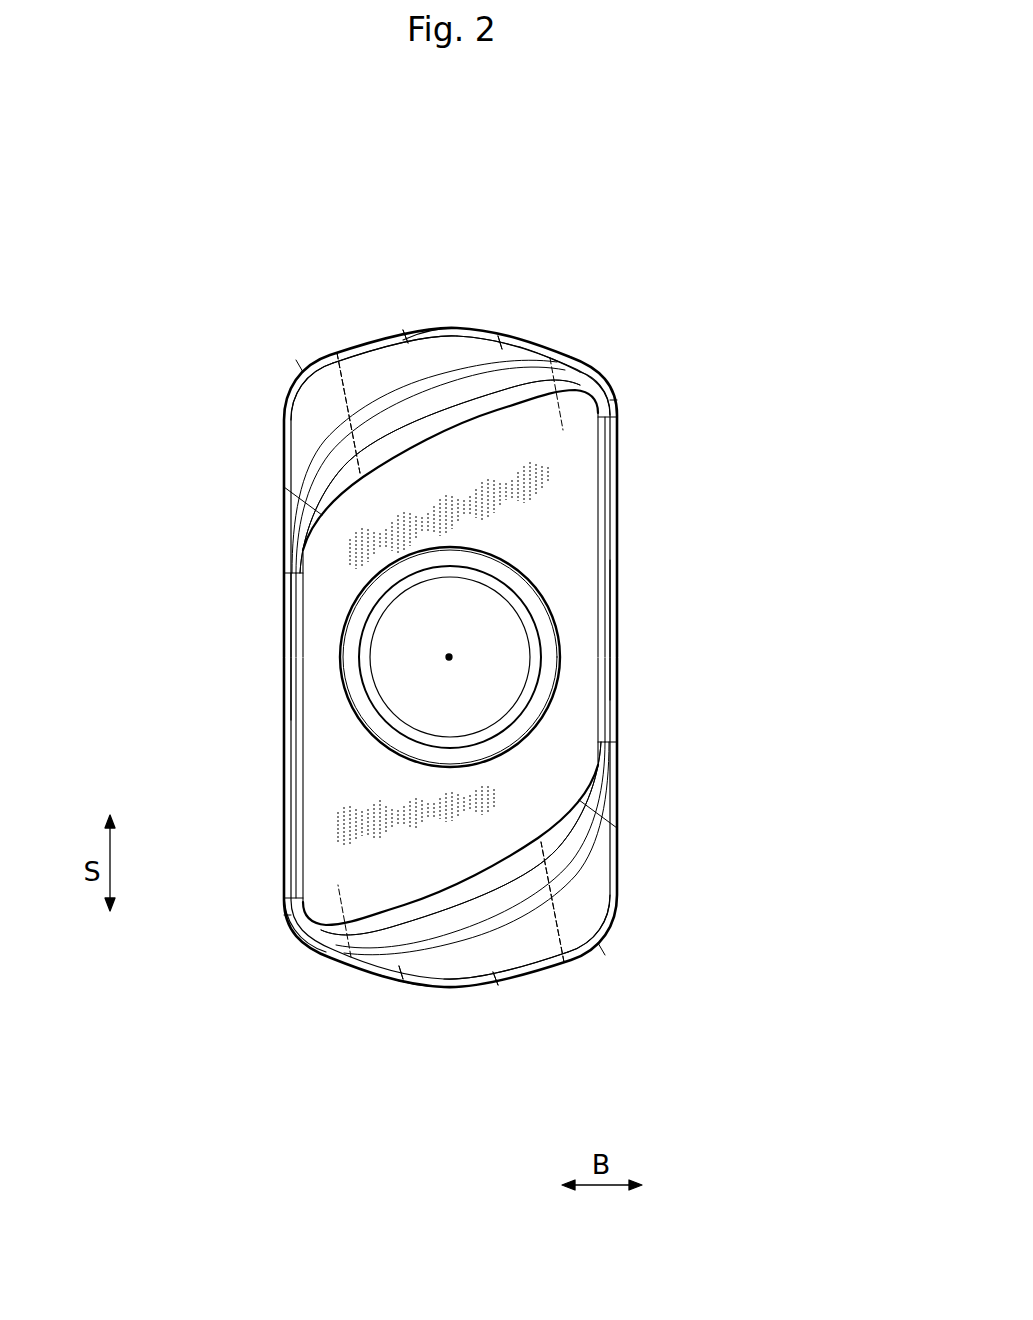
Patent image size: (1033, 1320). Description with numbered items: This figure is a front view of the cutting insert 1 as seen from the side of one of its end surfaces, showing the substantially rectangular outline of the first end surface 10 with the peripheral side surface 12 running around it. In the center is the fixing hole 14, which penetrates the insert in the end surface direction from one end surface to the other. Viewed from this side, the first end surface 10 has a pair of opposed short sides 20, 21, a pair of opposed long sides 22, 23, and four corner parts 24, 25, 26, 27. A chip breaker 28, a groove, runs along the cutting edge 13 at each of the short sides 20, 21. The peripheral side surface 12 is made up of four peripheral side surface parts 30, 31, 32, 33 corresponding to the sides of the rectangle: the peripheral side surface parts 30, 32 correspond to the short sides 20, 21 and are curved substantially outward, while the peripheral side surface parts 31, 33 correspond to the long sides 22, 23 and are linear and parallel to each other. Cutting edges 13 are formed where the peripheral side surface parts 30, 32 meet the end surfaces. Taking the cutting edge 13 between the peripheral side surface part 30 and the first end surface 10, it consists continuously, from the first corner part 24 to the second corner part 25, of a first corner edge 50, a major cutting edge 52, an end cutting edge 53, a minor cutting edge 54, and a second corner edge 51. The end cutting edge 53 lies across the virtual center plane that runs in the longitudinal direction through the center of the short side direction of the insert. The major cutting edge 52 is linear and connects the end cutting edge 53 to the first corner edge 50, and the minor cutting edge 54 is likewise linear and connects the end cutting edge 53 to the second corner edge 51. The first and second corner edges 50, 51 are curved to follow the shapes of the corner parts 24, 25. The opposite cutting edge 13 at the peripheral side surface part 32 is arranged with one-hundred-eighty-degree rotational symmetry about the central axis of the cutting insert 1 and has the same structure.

The cutting insert 1 is at (441, 230).
The first end surface 10 is at (564, 420).
The peripheral side surface 12 is at (619, 909).
The cutting edge 13 is at (455, 332).
The fixing hole 14 is at (497, 626).
The short side 20 is at (523, 971).
The short side 21 is at (412, 330).
The long side 22 is at (618, 617).
The long side 23 is at (284, 643).
The first corner part 24 is at (603, 938).
The second corner part 25 is at (297, 935).
The corner part 26 is at (295, 385).
The corner part 27 is at (606, 368).
The chip breaker 28 is at (312, 433).
The peripheral side surface part 30 is at (493, 978).
The peripheral side surface part 31 is at (284, 750).
The peripheral side surface part 32 is at (430, 330).
The peripheral side surface part 33 is at (618, 727).
The first corner edge 50 is at (296, 358).
The second corner edge 51 is at (611, 383).
The major cutting edge 52 is at (360, 338).
The end cutting edge 53 is at (485, 330).
The minor cutting edge 54 is at (537, 343).